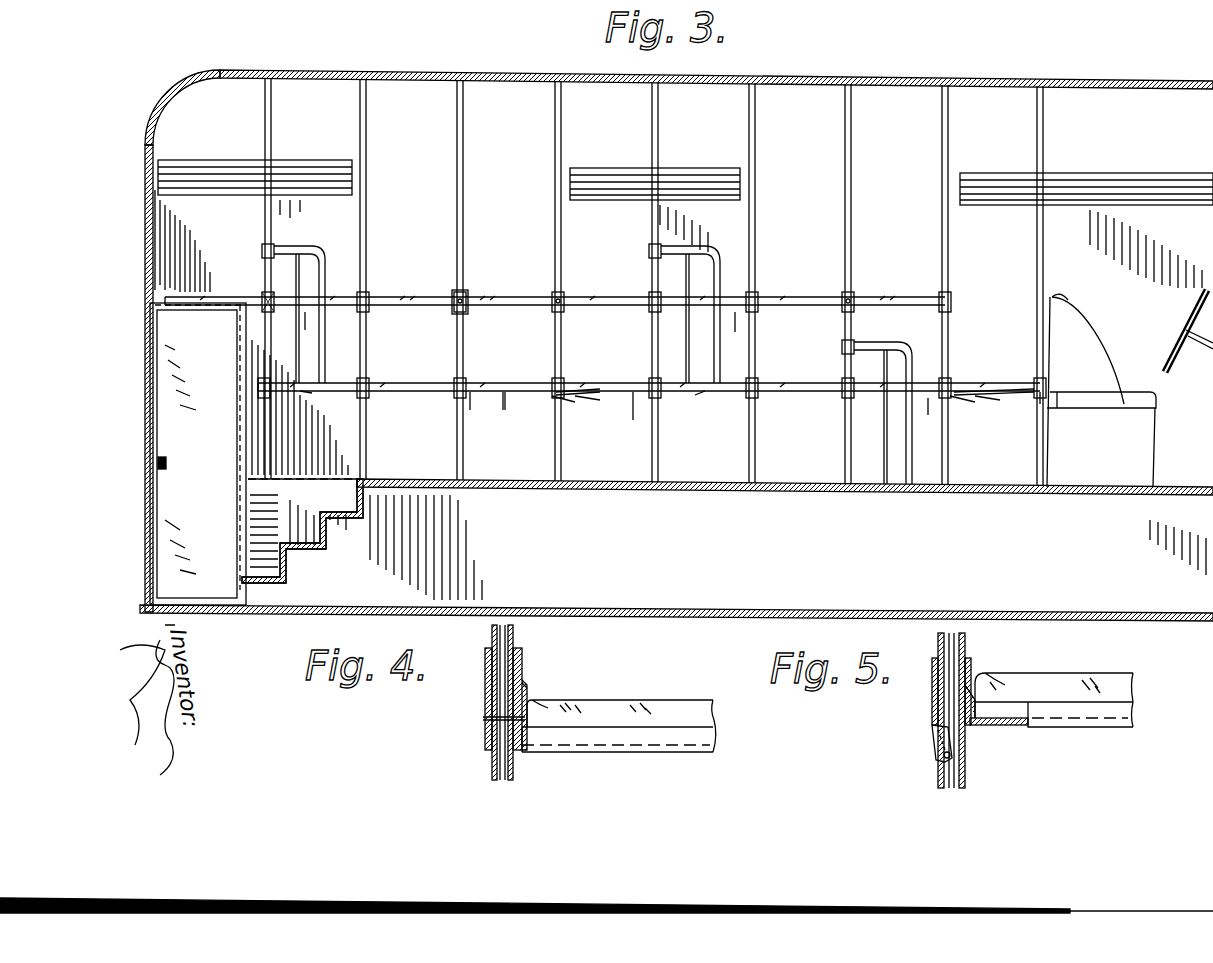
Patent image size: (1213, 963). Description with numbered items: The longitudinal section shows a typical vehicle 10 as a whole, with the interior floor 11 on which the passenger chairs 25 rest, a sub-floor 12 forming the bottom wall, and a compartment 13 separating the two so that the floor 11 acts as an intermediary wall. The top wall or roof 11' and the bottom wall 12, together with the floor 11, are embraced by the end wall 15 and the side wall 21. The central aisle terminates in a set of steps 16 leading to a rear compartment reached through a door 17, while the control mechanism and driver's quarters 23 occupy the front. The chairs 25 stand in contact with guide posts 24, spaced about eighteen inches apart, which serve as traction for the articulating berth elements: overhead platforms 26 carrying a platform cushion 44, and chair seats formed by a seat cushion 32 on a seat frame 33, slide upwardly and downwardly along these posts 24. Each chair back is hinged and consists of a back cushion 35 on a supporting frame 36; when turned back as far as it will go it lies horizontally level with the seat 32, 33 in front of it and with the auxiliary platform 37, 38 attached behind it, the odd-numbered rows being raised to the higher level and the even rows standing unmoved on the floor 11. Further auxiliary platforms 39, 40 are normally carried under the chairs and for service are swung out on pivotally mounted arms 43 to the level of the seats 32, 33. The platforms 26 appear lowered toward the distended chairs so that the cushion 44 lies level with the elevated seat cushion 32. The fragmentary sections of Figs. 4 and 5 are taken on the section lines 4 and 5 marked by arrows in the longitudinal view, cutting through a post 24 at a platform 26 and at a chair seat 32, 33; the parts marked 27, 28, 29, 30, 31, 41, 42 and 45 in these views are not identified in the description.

In FIG. 3, the vehicle 10 is at (850, 78).
In FIG. 3, the floor 11 is at (785, 503).
In FIG. 3, the top wall 11' is at (1003, 62).
In FIG. 3, the sub-floor 12 is at (1045, 615).
In FIG. 3, the compartment 13 is at (910, 540).
In FIG. 3, the end wall 15 is at (178, 218).
In FIG. 3, the set of steps 16 is at (315, 514).
In FIG. 3, the door 17 is at (148, 392).
In FIG. 3, the side wall 21 is at (511, 96).
In FIG. 3, the control mechanism and driver's quarters 23 is at (1142, 330).
In FIG. 3, the post 24 is at (458, 101).
In FIG. 4, the post 24 is at (515, 773).
In FIG. 5, the post 24 is at (966, 776).
In FIG. 3, the passenger chair 25 is at (293, 248).
In FIG. 5, the passenger chair 25 is at (1088, 730).
In FIG. 3, the platform 26 is at (794, 296).
In FIG. 4, the platform 26 is at (717, 742).
In FIG. 3, the window 27 is at (200, 160).
In FIG. 3, the hinge clamp 28 is at (463, 290).
In FIG. 4, the hinge clamp 28 is at (522, 662).
In FIG. 4, the bolt 29 is at (485, 735).
In FIG. 3, the clamp 30 is at (362, 137).
In FIG. 5, the clamp 30 is at (932, 742).
In FIG. 3, the clamp sleeve 31 is at (256, 306).
In FIG. 5, the clamp sleeve 31 is at (933, 709).
In FIG. 3, the chair seat cushion 32 is at (318, 292).
In FIG. 5, the chair seat cushion 32 is at (1120, 690).
In FIG. 3, the chair seat frame 33 is at (621, 379).
In FIG. 5, the chair seat frame 33 is at (1120, 714).
In FIG. 3, the back cushion 35 is at (186, 292).
In FIG. 3, the back frame 36 is at (212, 296).
In FIG. 3, the auxiliary platform element 37 is at (304, 394).
In FIG. 3, the auxiliary platform element 38 is at (336, 396).
In FIG. 3, the auxiliary platform element 39 is at (566, 385).
In FIG. 3, the auxiliary platform element 40 is at (633, 421).
In FIG. 3, the pivot 41 is at (506, 405).
In FIG. 3, the lever 42 is at (604, 392).
In FIG. 3, the pivotally mounted arm 43 is at (578, 398).
In FIG. 3, the platform cushion 44 is at (426, 296).
In FIG. 4, the platform cushion 44 is at (630, 705).
In FIG. 3, the rail section 45 is at (442, 312).
In FIG. 4, the rail section 45 is at (630, 740).
In FIG. 3, the section line 4 is at (590, 268).
In FIG. 3, the section line 5 is at (645, 275).